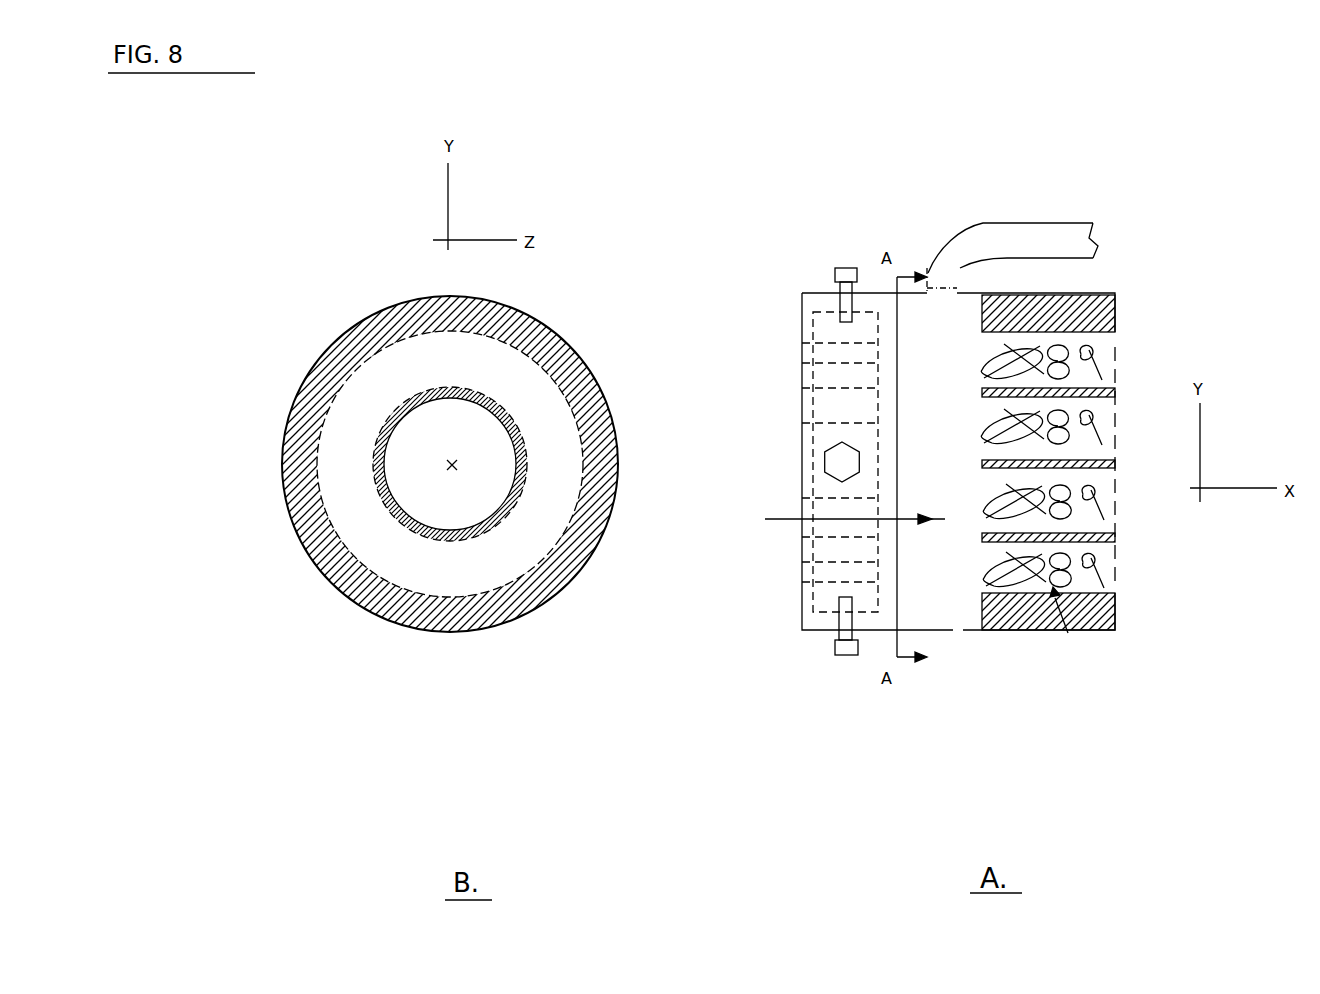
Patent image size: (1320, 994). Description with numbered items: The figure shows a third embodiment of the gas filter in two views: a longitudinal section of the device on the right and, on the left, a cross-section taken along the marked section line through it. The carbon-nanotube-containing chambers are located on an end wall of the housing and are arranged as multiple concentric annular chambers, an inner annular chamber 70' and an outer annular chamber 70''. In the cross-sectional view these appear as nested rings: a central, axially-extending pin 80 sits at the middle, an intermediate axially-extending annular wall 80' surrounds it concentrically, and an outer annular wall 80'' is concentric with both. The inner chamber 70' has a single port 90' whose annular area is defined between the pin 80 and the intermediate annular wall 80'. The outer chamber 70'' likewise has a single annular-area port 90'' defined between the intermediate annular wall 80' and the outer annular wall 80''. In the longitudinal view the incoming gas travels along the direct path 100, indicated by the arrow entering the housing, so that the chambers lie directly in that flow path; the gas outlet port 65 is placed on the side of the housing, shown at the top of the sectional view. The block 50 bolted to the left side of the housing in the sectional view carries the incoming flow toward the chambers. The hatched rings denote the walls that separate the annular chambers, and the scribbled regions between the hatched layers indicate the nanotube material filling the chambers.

The mounting block 50 is at (832, 330).
The gas outlet port 65 is at (948, 287).
The inner annular chamber 70' is at (450, 464).
The outer annular chamber 70'' is at (450, 464).
The pin 80 is at (450, 489).
The intermediate annular wall 80' is at (476, 546).
The outer annular wall 80'' is at (450, 543).
The port of the inner chamber 90' is at (1029, 277).
The port of the outer chamber 90'' is at (1033, 620).
The direct path of the incoming flow 100 is at (770, 520).